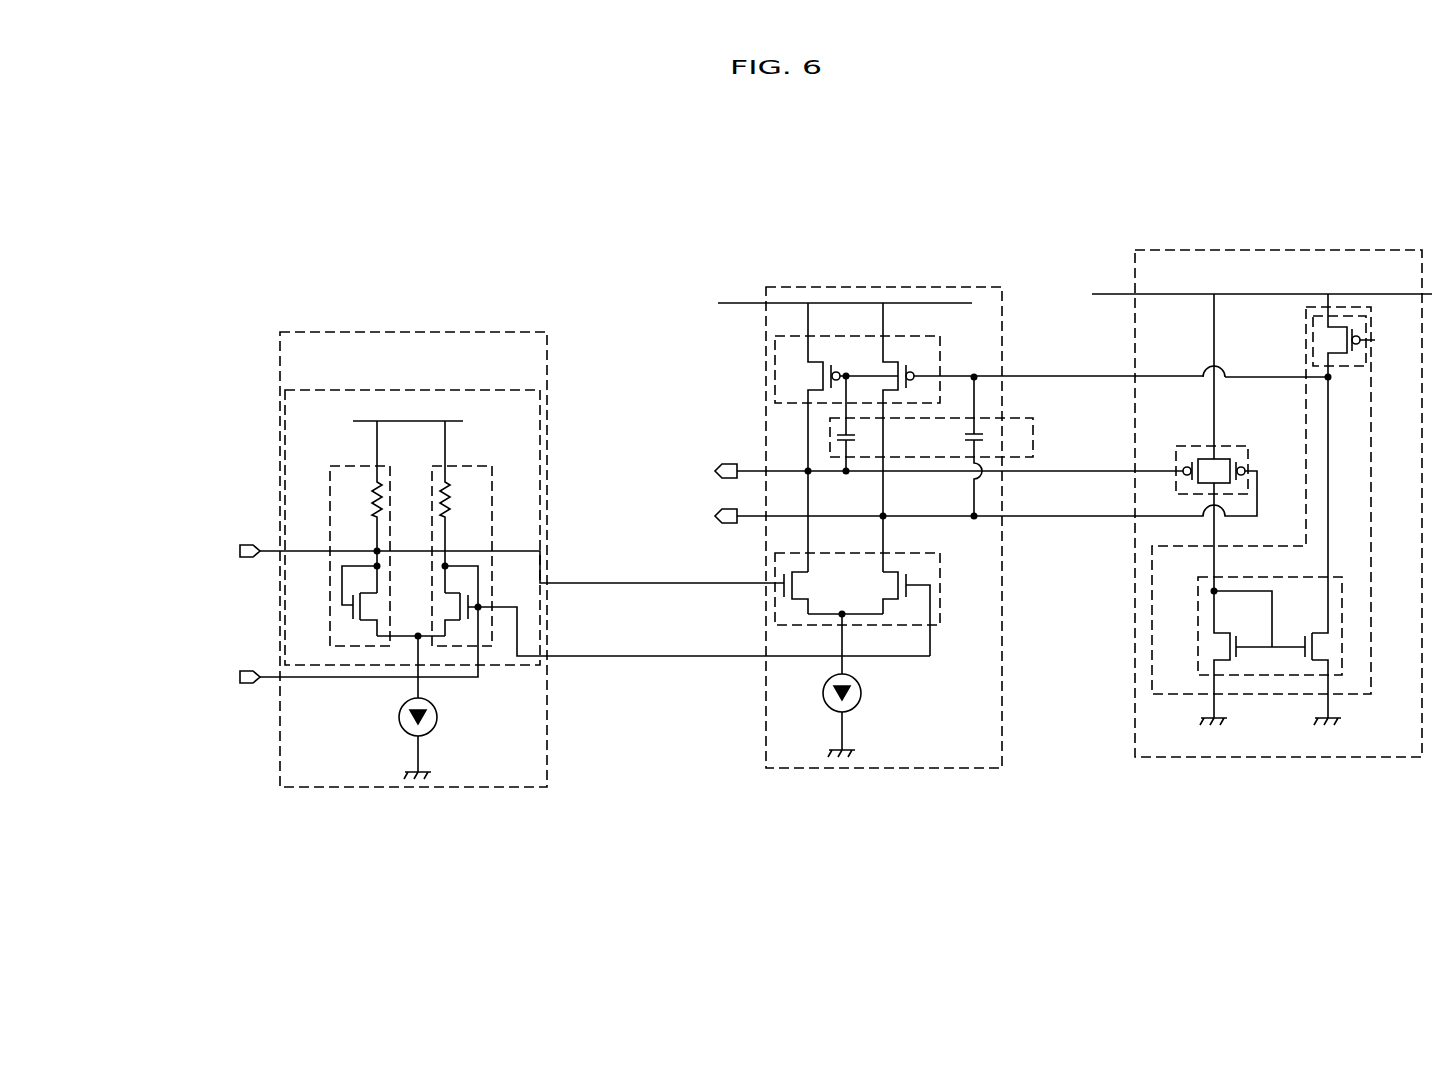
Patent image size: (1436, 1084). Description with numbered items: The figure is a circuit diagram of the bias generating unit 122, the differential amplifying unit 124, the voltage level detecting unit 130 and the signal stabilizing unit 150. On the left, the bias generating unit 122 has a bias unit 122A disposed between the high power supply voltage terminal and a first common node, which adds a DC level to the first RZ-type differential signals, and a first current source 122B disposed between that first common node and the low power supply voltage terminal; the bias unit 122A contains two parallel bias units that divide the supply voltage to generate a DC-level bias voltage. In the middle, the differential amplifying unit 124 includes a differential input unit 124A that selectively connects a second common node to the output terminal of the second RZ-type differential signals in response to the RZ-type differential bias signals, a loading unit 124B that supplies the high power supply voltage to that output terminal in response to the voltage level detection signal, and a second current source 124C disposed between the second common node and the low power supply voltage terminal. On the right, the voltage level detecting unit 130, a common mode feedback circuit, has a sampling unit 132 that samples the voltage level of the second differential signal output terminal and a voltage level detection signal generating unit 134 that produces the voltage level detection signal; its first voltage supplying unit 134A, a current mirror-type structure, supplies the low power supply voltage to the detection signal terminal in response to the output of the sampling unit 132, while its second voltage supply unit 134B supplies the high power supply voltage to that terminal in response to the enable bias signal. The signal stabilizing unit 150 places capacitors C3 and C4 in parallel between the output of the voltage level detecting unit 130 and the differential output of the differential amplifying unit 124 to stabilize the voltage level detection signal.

The bias generating unit 122 is at (490, 332).
The bias unit 122A is at (470, 390).
The first current source 122B is at (437, 716).
The differential amplifying unit 124 is at (945, 287).
The differential input unit 124A is at (903, 553).
The loading unit 124B is at (900, 336).
The second current source 124C is at (861, 692).
The signal stabilizing unit 150 is at (1010, 419).
The capacitor C3 is at (856, 423).
The capacitor C4 is at (985, 446).
The voltage level detecting unit 130 is at (1362, 250).
The sampling unit 132 is at (1248, 450).
The voltage level detection signal generating unit 134 is at (1257, 697).
The first voltage supplying unit 134A is at (1265, 577).
The second voltage supply unit 134B is at (1313, 340).